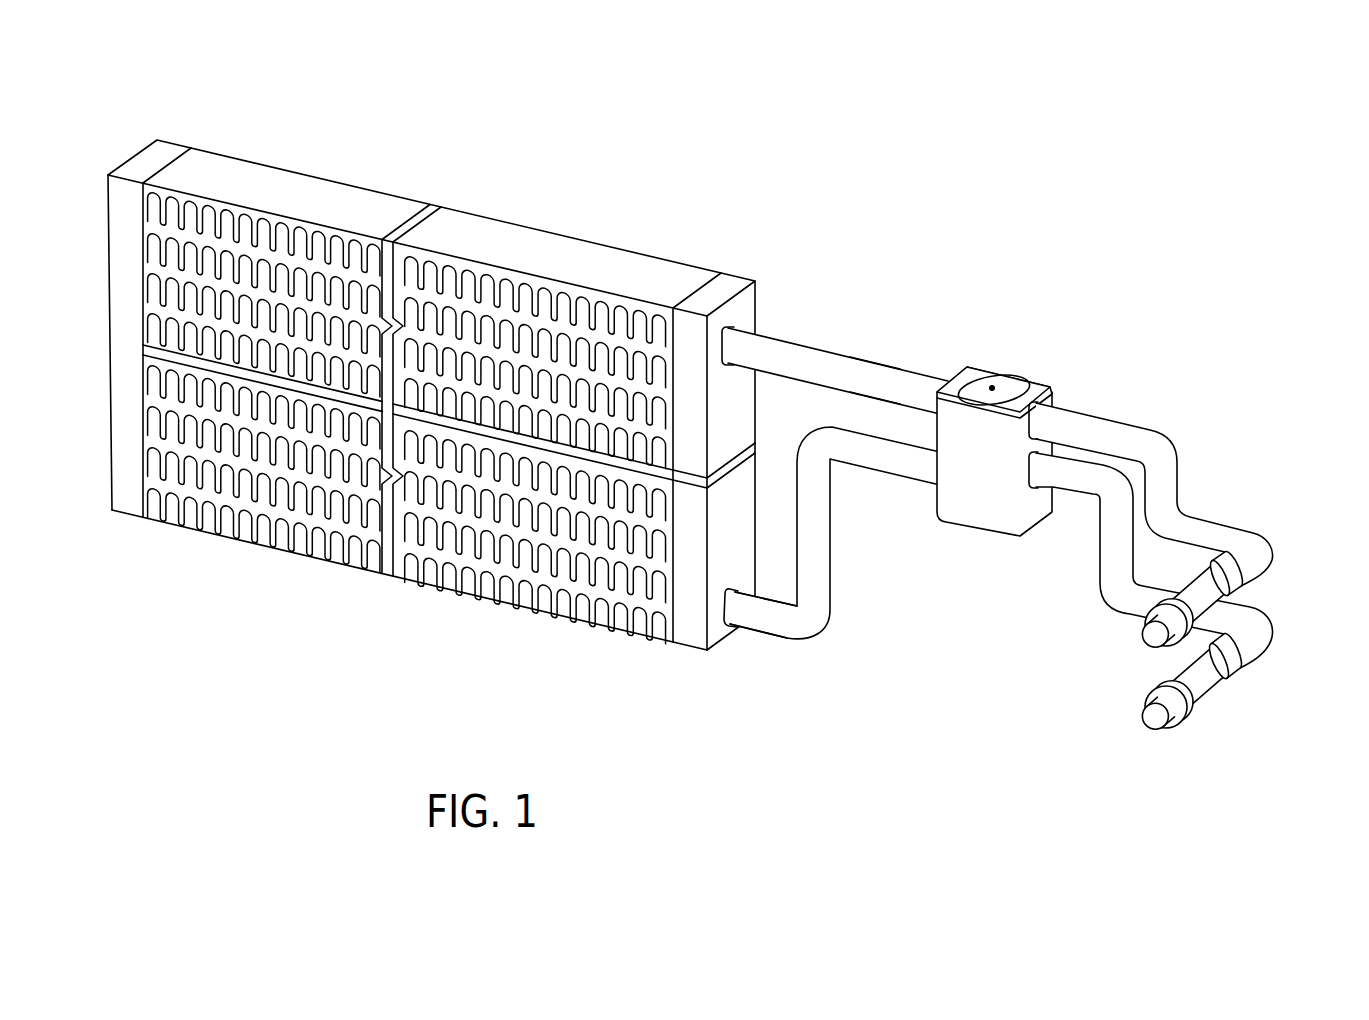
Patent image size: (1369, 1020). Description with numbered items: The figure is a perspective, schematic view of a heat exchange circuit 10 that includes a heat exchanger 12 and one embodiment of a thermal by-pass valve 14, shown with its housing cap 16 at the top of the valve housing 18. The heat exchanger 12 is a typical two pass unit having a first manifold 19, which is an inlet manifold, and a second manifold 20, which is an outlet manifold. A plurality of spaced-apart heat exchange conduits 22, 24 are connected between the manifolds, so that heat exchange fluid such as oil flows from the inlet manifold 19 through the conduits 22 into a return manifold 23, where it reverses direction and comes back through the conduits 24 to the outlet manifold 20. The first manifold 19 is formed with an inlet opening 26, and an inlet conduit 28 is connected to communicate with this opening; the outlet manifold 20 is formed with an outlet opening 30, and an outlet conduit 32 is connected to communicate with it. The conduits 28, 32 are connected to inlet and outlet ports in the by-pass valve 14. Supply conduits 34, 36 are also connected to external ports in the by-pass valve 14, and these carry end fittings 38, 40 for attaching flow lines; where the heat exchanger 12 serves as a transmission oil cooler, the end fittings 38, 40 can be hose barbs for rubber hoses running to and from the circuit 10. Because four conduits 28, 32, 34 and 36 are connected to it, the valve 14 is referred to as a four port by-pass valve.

The heat exchange circuit 10 is at (1031, 142).
The heat exchanger 12 is at (386, 583).
The thermal by-pass valve 14 is at (1052, 401).
The housing cap 16 is at (1012, 389).
The valve housing 18 is at (980, 489).
The first manifold 19 is at (692, 626).
The second manifold 20 is at (720, 284).
The heat exchange conduits 22 is at (290, 477).
The return manifold 23 is at (133, 478).
The heat exchange conduits 24 is at (290, 308).
The inlet opening 26 is at (714, 607).
The inlet conduit 28 is at (818, 519).
The outlet opening 30 is at (782, 362).
The outlet conduit 32 is at (864, 371).
The supply conduit 34 is at (1168, 483).
The supply conduit 36 is at (1114, 533).
The end fitting 38 is at (1155, 634).
The end fitting 40 is at (1155, 720).